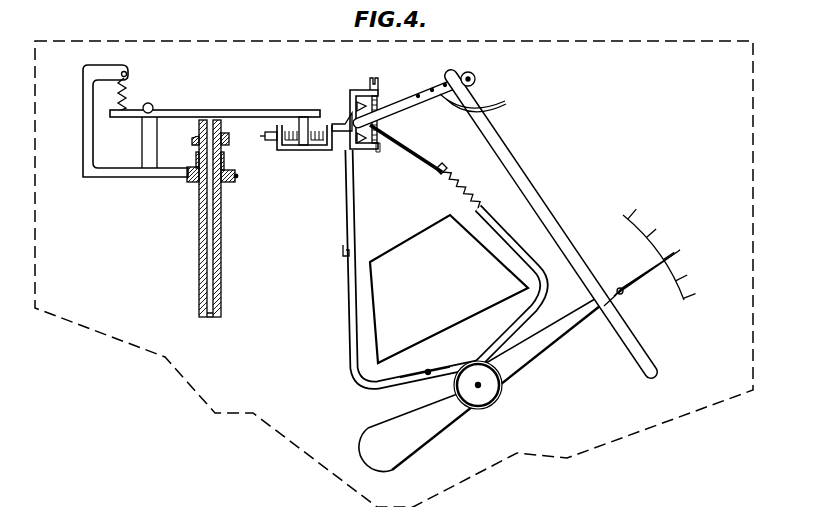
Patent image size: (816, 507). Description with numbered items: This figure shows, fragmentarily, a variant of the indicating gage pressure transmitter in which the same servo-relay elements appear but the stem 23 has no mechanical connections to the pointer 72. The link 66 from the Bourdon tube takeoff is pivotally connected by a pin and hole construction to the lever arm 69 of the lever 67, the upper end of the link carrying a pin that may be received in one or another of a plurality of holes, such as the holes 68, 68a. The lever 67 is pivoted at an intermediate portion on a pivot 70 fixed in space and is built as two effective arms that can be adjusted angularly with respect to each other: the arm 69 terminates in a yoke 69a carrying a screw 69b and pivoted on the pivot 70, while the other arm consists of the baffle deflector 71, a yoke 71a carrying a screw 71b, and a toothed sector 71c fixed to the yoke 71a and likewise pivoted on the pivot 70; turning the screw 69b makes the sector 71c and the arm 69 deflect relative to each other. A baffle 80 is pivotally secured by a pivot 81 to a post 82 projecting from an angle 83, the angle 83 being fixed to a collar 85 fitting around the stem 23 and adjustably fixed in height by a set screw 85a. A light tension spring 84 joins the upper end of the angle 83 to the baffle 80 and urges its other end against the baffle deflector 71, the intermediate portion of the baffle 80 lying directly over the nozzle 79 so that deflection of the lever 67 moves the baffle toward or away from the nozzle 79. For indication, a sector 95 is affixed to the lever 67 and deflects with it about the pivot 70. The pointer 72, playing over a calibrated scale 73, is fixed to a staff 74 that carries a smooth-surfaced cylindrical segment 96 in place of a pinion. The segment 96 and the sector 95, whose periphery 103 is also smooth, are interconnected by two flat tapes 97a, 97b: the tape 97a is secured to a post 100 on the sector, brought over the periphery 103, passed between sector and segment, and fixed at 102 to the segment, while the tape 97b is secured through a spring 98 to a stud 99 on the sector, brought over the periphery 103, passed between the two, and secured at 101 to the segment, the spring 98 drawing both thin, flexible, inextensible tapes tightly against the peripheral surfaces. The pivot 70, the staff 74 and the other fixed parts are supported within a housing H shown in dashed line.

The stem 23 is at (223, 273).
The link 66 is at (551, 221).
The lever 67 is at (398, 127).
The hole 68 is at (477, 79).
The hole 68a is at (506, 102).
The lever arm 69 is at (399, 105).
The yoke 69a is at (363, 152).
The screw 69b is at (377, 85).
The pivot 70 is at (356, 118).
The baffle-deflector 71 is at (299, 124).
The yoke 71a is at (305, 150).
The screw 71b is at (268, 142).
The toothed sector 71c is at (340, 132).
The pointer 72 is at (625, 294).
The scale 73 is at (655, 245).
The staff 74 is at (502, 386).
The nozzle 79 is at (229, 140).
The baffle 80 is at (260, 108).
The pivot 81 is at (145, 113).
The post 82 is at (197, 137).
The angle 83 is at (84, 178).
The tension spring 84 is at (128, 93).
The collar 85 is at (190, 188).
The set screw 85a is at (244, 182).
The sector 95 is at (400, 246).
The cylindrical segment 96 is at (484, 398).
The flat tape 97a is at (381, 388).
The flat tape 97b is at (537, 271).
The spring 98 is at (464, 186).
The stud 99 is at (443, 165).
The post 100 is at (342, 252).
The securing point 101 is at (482, 405).
The fixing point 102 is at (498, 399).
The periphery 103 is at (424, 369).
The housing H is at (659, 42).